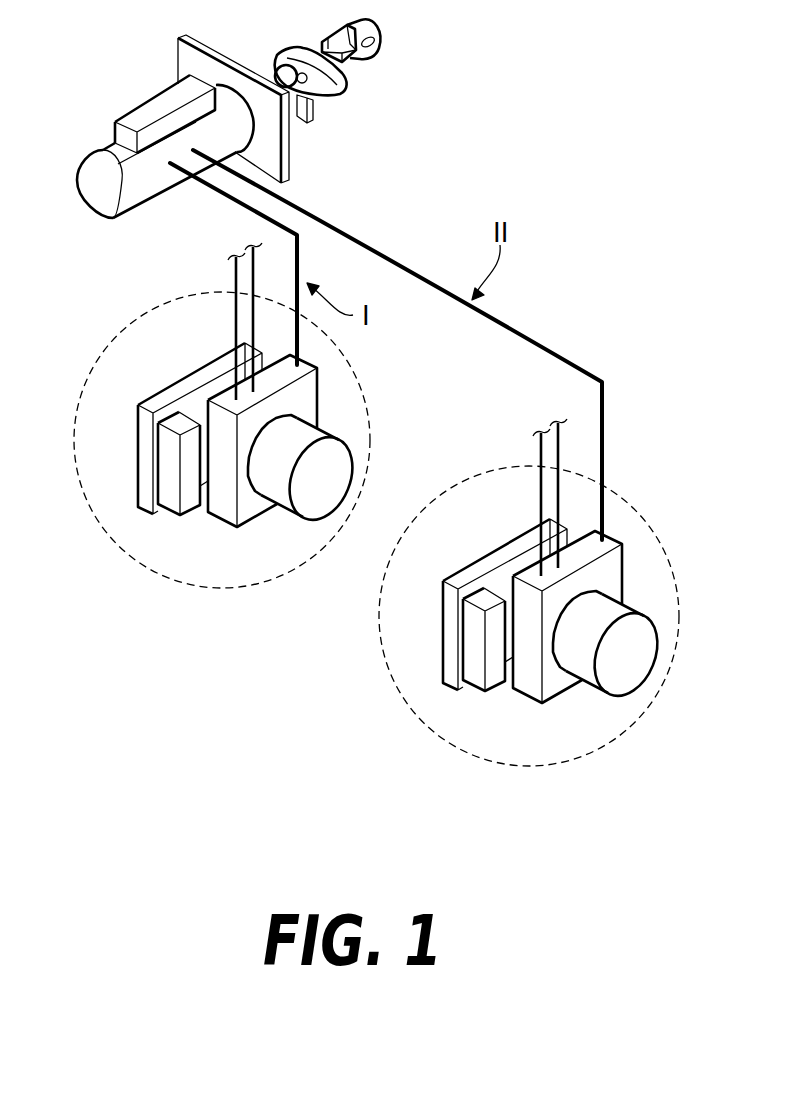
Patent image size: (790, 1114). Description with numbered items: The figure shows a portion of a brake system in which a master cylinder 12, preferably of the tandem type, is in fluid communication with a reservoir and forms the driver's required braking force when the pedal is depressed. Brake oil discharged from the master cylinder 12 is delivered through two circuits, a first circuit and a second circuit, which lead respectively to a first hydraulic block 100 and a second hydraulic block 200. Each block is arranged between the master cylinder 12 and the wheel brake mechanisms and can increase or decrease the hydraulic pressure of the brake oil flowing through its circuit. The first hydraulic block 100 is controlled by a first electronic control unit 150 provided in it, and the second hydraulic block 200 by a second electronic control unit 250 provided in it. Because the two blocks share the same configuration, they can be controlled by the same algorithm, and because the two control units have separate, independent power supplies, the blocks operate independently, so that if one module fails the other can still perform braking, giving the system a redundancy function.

The master cylinder 12 is at (100, 157).
The first hydraulic block 100 is at (216, 438).
The first electronic control unit 150 is at (165, 395).
The second hydraulic block 200 is at (505, 597).
The second electronic control unit 250 is at (505, 592).